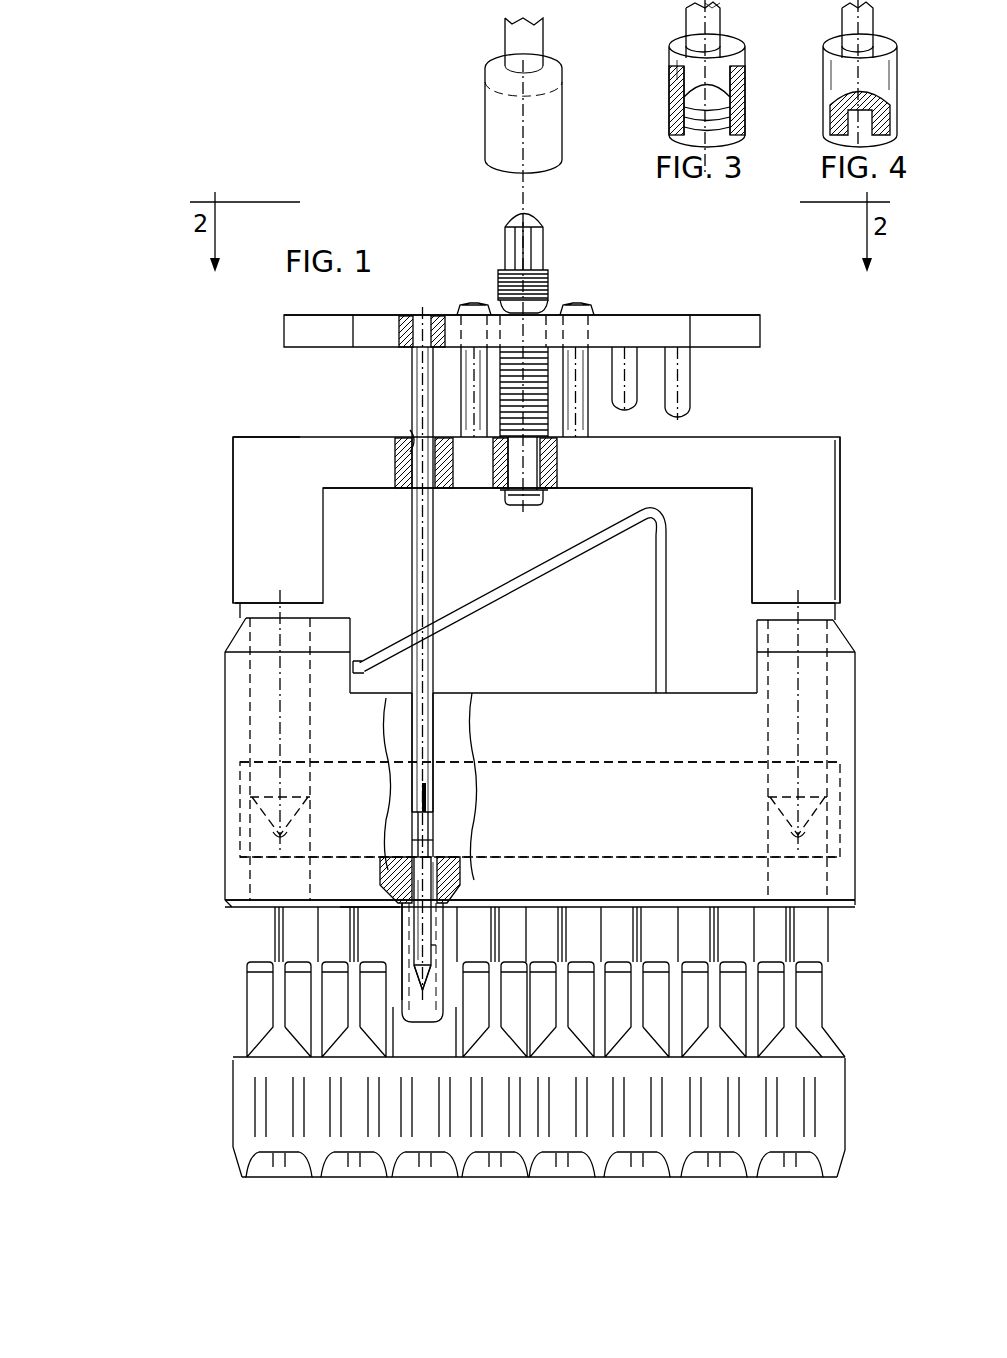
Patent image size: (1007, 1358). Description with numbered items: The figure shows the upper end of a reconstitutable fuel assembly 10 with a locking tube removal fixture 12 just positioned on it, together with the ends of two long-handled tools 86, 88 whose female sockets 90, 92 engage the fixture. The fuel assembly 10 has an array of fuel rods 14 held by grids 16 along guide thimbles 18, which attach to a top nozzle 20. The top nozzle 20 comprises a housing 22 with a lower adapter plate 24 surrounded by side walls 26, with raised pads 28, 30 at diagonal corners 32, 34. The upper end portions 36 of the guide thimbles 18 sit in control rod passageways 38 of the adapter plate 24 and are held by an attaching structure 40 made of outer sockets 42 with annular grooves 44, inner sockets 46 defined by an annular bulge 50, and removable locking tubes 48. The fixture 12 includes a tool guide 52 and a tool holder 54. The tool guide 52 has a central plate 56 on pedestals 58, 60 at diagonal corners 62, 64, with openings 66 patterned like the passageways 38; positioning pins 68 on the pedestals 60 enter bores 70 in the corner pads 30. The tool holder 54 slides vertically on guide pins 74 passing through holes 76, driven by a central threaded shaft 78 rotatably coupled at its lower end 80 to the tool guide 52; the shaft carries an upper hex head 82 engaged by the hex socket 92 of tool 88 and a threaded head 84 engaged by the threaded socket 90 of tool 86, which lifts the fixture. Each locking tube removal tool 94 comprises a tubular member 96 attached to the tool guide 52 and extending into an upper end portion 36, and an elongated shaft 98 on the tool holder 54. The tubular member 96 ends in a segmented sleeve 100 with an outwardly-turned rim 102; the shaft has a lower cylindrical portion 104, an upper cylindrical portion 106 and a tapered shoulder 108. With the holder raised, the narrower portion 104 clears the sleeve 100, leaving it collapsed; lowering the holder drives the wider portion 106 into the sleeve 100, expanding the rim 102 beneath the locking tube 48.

In FIG. 1, the reconstitutable fuel assembly 10 is at (872, 758).
In FIG. 1, the locking tube removal fixture 12 is at (746, 308).
In FIG. 1, the fuel rods 14 is at (292, 986).
In FIG. 1, the grids 16 is at (838, 1086).
In FIG. 1, the guide thimbles 18 is at (702, 938).
In FIG. 1, the top nozzle 20 is at (857, 839).
In FIG. 1, the housing 22 is at (226, 893).
In FIG. 1, the adapter plate 24 is at (442, 858).
In FIG. 1, the side walls 26 is at (603, 751).
In FIG. 1, the raised pads 28 is at (810, 652).
In FIG. 1, the raised corner pads 30 is at (270, 615).
In FIG. 1, the diagonal corners 32 is at (858, 674).
In FIG. 1, the diagonal corners 34 is at (226, 688).
In FIG. 1, the upper end portions 36 is at (408, 958).
In FIG. 1, the control rod passageways 38 is at (395, 905).
In FIG. 1, the attaching structure 40 is at (455, 863).
In FIG. 1, the outer sockets 42 is at (440, 847).
In FIG. 1, the annular circumferential groove 44 is at (456, 896).
In FIG. 1, the inner sockets 46 is at (405, 922).
In FIG. 1, the locking tubes 48 is at (395, 905).
In FIG. 1, the annular circumferential bulge 50 is at (458, 880).
In FIG. 1, the tool guide 52 is at (846, 486).
In FIG. 1, the tool holder 54 is at (762, 331).
In FIG. 1, the central plate 56 is at (698, 458).
In FIG. 1, the pedestals 58 is at (830, 550).
In FIG. 1, the pedestals 60 is at (240, 508).
In FIG. 1, the diagonal corners 62 is at (846, 460).
In FIG. 1, the diagonal corners 64 is at (232, 460).
In FIG. 1, the openings 66 is at (414, 425).
In FIG. 1, the positioning pins 68 is at (260, 745).
In FIG. 1, the bores 70 is at (238, 842).
In FIG. 1, the guide pins 74 is at (474, 302).
In FIG. 1, the holes 76 is at (592, 322).
In FIG. 1, the central externally threaded shaft 78 is at (544, 245).
In FIG. 1, the lower end 80 is at (515, 472).
In FIG. 1, the upper inner hex head 82 is at (505, 238).
In FIG. 1, the lower outer threaded head 84 is at (550, 292).
In FIG. 1, the long-handled tool 86 is at (488, 104).
In FIG. 3, the long-handled tool 86 is at (725, 21).
In FIG. 4, the long-handled tool 88 is at (880, 21).
In FIG. 3, the female socket 90 is at (740, 103).
In FIG. 4, the female socket 92 is at (898, 103).
In FIG. 1, the locking tube removal tools 94 is at (410, 566).
In FIG. 1, the elongated tubular member 96 is at (412, 735).
In FIG. 1, the elongated shaft 98 is at (415, 822).
In FIG. 1, the segmented sleeve 100 is at (440, 830).
In FIG. 1, the segmented rim 102 is at (432, 1012).
In FIG. 1, the lower cylindrical portion 104 is at (440, 952).
In FIG. 1, the upper cylindrical portion 106 is at (418, 843).
In FIG. 1, the tapered shoulder 108 is at (420, 860).